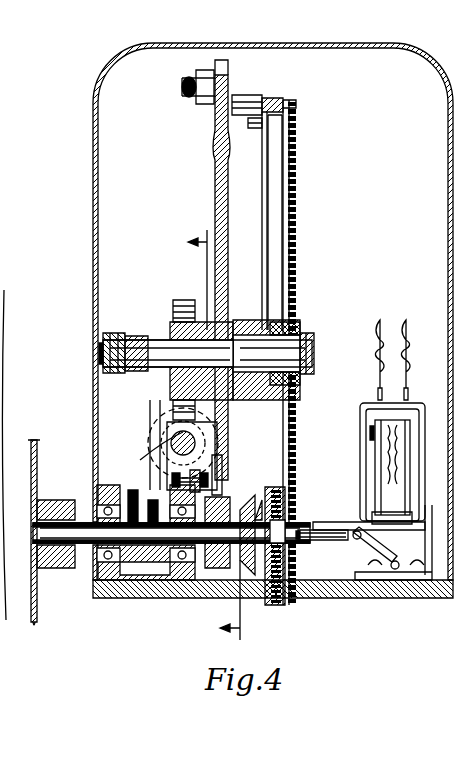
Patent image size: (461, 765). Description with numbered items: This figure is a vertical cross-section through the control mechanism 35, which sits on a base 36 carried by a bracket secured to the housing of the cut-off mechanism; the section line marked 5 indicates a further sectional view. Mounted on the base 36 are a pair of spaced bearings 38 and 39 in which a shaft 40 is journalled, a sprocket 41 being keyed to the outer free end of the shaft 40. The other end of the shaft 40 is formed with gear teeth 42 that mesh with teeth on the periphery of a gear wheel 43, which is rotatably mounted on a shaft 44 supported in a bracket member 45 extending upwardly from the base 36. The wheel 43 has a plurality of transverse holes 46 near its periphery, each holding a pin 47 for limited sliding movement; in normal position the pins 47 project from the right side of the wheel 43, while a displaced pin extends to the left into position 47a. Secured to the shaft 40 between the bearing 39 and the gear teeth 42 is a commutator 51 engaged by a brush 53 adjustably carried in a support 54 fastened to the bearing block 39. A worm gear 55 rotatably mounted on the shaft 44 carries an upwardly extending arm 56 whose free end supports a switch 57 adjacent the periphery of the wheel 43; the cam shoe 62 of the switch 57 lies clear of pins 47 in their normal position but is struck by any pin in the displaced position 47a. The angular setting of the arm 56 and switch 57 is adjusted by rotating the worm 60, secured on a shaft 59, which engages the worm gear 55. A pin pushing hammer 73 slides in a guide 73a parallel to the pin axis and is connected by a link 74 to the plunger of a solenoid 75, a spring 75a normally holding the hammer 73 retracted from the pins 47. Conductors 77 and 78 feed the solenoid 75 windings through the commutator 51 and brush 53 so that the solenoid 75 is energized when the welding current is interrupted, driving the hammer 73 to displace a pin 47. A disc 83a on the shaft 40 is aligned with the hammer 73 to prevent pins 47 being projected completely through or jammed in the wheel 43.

The control mechanism 35 is at (290, 44).
The base 36 is at (376, 598).
The bearing 38 is at (112, 582).
The bearing 39 is at (178, 582).
The shaft 40 is at (88, 545).
The sprocket 41 is at (40, 600).
The gear teeth 42 is at (264, 585).
The gear wheel 43 is at (264, 265).
The shaft 44 is at (300, 330).
The bracket member 45 is at (160, 420).
The transverse holes 46 is at (287, 100).
The pin 47 is at (302, 208).
The displaced position of pin 47a is at (268, 190).
The commutator 51 is at (228, 580).
The brush 53 is at (222, 470).
The support 54 is at (172, 482).
The worm gear 55 is at (175, 300).
The arm 56 is at (214, 178).
The switch 57 is at (255, 98).
The shaft 59 is at (140, 460).
The worm 60 is at (172, 443).
The cam shoe 62 is at (250, 126).
The hammer 73 is at (302, 530).
The guide 73a is at (352, 537).
The link 74 is at (372, 558).
The solenoid 75 is at (372, 434).
The spring 75a is at (424, 420).
The conductor 77 is at (385, 348).
The conductor 78 is at (419, 348).
The disc 83a is at (256, 505).
The section line 5 is at (212, 435).